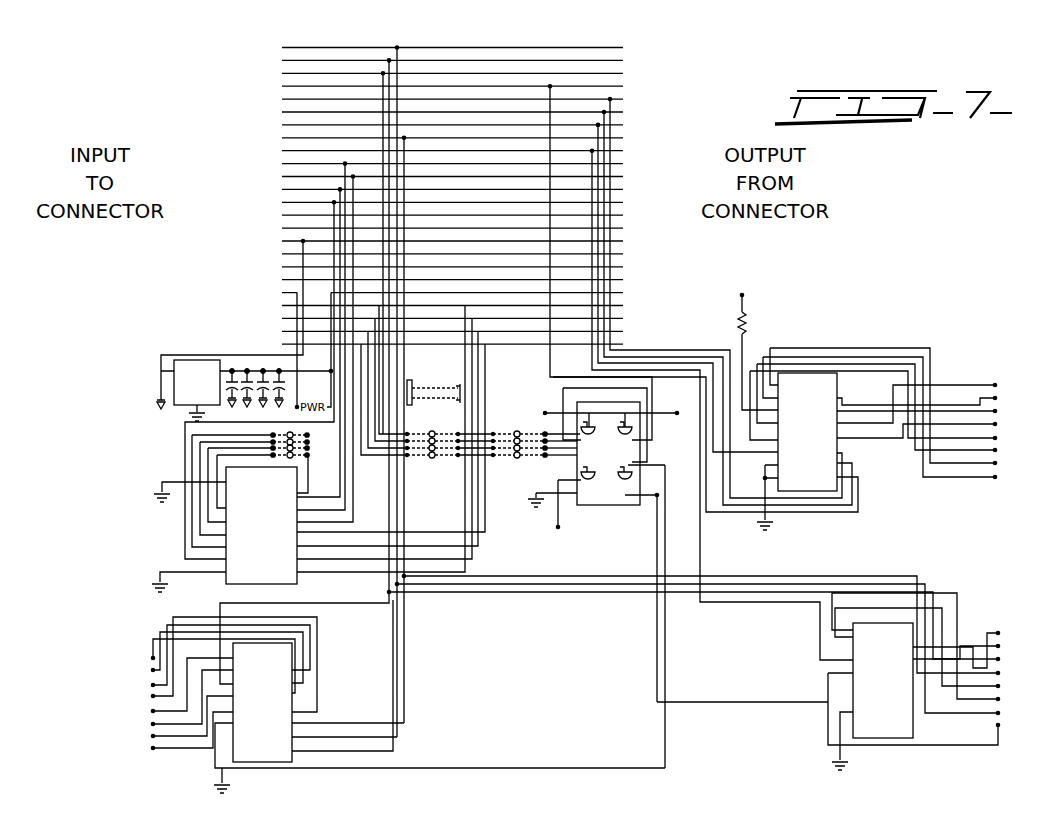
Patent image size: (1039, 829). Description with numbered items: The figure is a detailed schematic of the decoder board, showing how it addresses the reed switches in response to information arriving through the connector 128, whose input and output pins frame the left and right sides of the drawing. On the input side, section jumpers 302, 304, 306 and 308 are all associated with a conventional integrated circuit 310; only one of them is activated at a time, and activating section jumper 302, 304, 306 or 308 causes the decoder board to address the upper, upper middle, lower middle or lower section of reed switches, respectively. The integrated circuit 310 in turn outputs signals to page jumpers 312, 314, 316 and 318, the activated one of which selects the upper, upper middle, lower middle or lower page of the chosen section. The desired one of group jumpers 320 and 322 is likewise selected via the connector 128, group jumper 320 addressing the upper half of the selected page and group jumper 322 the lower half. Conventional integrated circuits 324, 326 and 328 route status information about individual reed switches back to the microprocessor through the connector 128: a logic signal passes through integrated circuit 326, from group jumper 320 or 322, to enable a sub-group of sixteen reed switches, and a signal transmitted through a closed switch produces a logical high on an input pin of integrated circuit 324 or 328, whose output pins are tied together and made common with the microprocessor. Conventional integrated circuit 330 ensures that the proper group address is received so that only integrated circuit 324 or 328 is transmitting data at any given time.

The connector 128 is at (432, 196).
The section jumper 302 is at (309, 435).
The section jumper 304 is at (309, 442).
The section jumper 306 is at (309, 448).
The section jumper 308 is at (320, 489).
The integrated circuit 310 is at (283, 586).
The page jumper 312 is at (500, 430).
The page jumper 314 is at (509, 437).
The page jumper 316 is at (501, 452).
The page jumper 318 is at (528, 460).
The group jumper 320 is at (447, 382).
The group jumper 322 is at (450, 434).
The integrated circuit 324 is at (268, 763).
The integrated circuit 326 is at (840, 446).
The integrated circuit 328 is at (868, 740).
The integrated circuit 330 is at (606, 505).